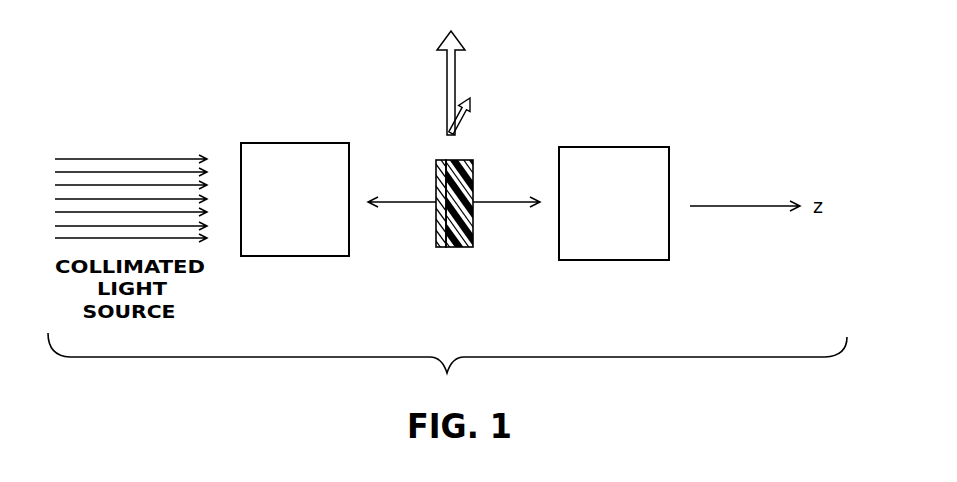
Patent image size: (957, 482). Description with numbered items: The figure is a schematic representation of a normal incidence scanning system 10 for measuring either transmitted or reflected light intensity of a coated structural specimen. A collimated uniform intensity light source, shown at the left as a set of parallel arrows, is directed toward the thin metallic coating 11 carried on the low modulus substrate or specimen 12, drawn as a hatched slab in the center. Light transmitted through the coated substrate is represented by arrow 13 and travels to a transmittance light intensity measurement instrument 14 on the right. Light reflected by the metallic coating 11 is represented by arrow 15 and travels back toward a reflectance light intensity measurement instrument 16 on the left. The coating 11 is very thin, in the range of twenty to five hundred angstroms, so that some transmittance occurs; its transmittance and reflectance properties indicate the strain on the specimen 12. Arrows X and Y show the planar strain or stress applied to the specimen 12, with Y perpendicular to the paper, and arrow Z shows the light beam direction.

The normal incidence scanning system 10 is at (362, 99).
The thin metallic coating 11 is at (437, 162).
The low modulus substrate or specimen 12 is at (471, 160).
The transmitted light arrow 13 is at (495, 205).
The transmittance light intensity measurement instrument 14 is at (627, 217).
The reflected light arrow 15 is at (409, 205).
The reflectance light intensity measurement instrument 16 is at (281, 214).